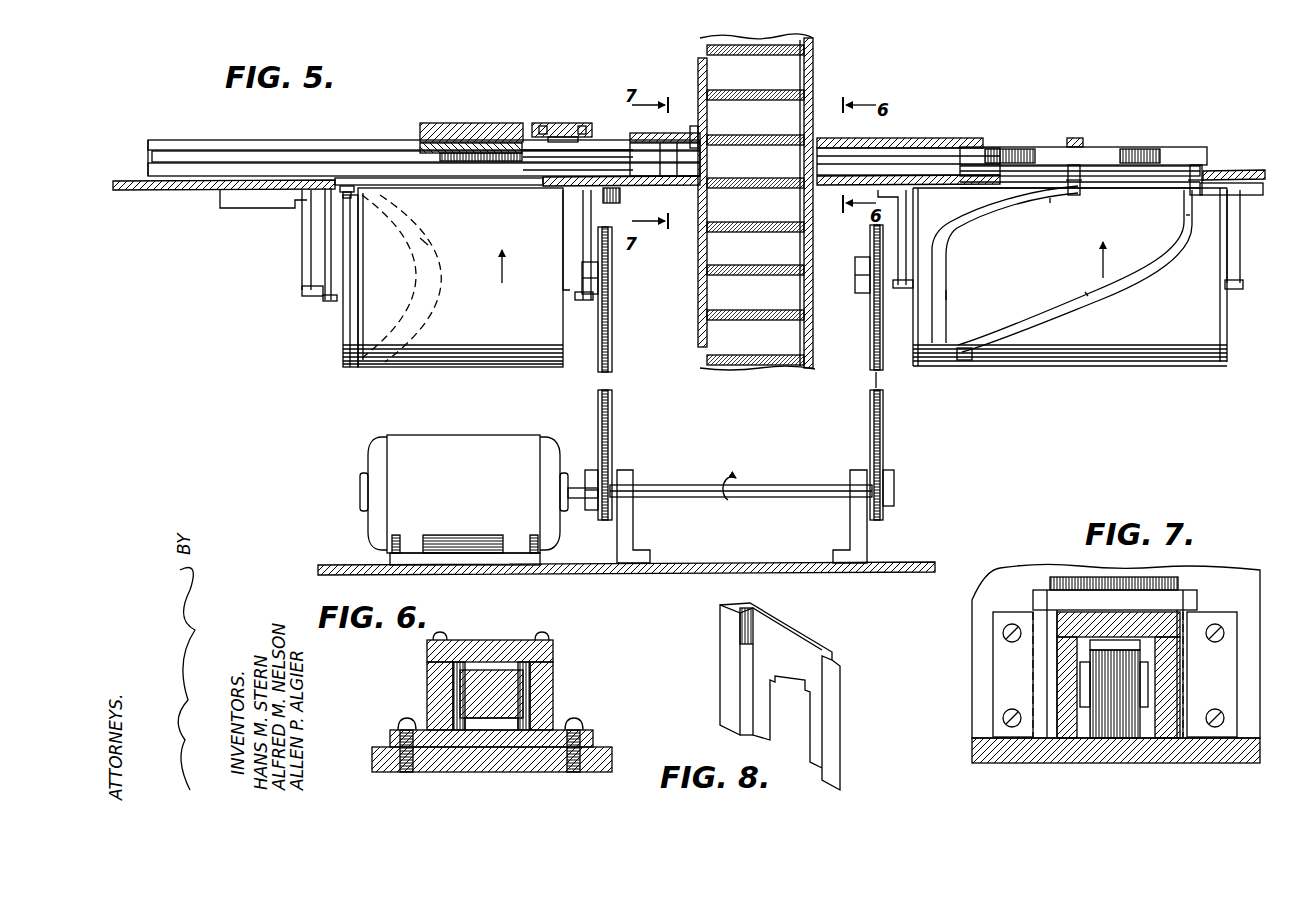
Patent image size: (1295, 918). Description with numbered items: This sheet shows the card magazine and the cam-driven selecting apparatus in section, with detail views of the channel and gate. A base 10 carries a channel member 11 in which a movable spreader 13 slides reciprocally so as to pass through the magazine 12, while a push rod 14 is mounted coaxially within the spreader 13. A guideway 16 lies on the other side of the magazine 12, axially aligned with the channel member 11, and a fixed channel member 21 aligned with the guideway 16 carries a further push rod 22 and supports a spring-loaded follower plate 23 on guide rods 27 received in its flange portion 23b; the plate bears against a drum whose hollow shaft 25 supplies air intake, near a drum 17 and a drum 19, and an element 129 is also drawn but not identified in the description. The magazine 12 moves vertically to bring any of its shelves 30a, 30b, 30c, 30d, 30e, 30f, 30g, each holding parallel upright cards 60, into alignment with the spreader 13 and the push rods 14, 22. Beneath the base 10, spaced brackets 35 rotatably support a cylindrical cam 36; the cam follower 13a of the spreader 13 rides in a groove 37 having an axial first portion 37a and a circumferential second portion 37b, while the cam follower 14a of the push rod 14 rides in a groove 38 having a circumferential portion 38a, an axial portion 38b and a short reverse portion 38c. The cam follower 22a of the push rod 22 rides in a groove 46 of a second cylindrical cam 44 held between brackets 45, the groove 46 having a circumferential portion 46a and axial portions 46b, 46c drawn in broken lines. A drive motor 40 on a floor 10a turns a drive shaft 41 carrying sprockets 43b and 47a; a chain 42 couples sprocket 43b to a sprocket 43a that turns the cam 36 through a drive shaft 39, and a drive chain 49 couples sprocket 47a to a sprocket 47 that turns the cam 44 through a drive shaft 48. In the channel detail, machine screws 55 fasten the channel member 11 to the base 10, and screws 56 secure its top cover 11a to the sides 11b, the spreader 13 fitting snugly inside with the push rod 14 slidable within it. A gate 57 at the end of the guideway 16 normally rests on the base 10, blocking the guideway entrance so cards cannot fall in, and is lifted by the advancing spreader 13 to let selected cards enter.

In FIG. 5, the base 10 is at (178, 187).
In FIG. 6, the base 10 is at (605, 748).
In FIG. 7, the base 10 is at (1000, 762).
In FIG. 5, the floor 10a is at (648, 574).
In FIG. 5, the channel member 11 is at (944, 138).
In FIG. 6, the channel member 11 is at (528, 640).
In FIG. 6, the top cover 11a is at (497, 650).
In FIG. 6, the sides 11b is at (428, 677).
In FIG. 5, the magazine 12 is at (759, 202).
In FIG. 7, the magazine 12 is at (980, 598).
In FIG. 5, the spreader 13 is at (1010, 147).
In FIG. 6, the spreader 13 is at (452, 692).
In FIG. 5, the cam follower 13a is at (1078, 192).
In FIG. 5, the push rod 14 is at (1125, 150).
In FIG. 6, the push rod 14 is at (512, 686).
In FIG. 5, the cam follower 14a is at (1196, 195).
In FIG. 5, the guideway 16 is at (645, 135).
In FIG. 7, the guideway 16 is at (1160, 622).
In FIG. 5, the drum 17 is at (583, 125).
In FIG. 5, the drum 19 is at (290, 147).
In FIG. 5, the fixed channel member 21 is at (455, 128).
In FIG. 5, the push rod 22 is at (418, 150).
In FIG. 5, the cam follower 22a is at (348, 200).
In FIG. 5, the follower plate 23 is at (548, 123).
In FIG. 5, the flange portion 23b is at (562, 124).
In FIG. 5, the hollow shaft 25 is at (621, 198).
In FIG. 5, the guide rods 27 is at (540, 128).
In FIG. 5, the shelf 30a is at (800, 60).
In FIG. 5, the shelf 30b is at (800, 105).
In FIG. 5, the shelf 30c is at (718, 180).
In FIG. 5, the shelf 30d is at (718, 222).
In FIG. 5, the shelf 30e is at (718, 253).
In FIG. 5, the shelf 30f is at (718, 291).
In FIG. 5, the shelf 30g is at (718, 332).
In FIG. 5, the brackets 35 is at (908, 207).
In FIG. 5, the cylindrical cam 36 is at (1187, 360).
In FIG. 5, the groove 37 is at (1004, 214).
In FIG. 5, the first portion of groove 37a is at (1052, 200).
In FIG. 5, the second portion of groove 37b is at (947, 290).
In FIG. 5, the groove 38 is at (1156, 264).
In FIG. 5, the first portion of groove 38a is at (1184, 216).
In FIG. 5, the second portion of groove 38b is at (1086, 294).
In FIG. 5, the third portion of groove 38c is at (966, 360).
In FIG. 5, the drive shaft 39 is at (886, 292).
In FIG. 5, the drive motor 40 is at (474, 440).
In FIG. 5, the drive shaft 41 is at (770, 486).
In FIG. 5, the chain 42 is at (872, 392).
In FIG. 5, the sprocket 43a is at (868, 238).
In FIG. 5, the sprocket 43b is at (895, 486).
In FIG. 5, the cylindrical cam 44 is at (510, 356).
In FIG. 5, the brackets 45 is at (300, 254).
In FIG. 5, the groove 46 is at (345, 323).
In FIG. 5, the first portion of groove 46a is at (352, 290).
In FIG. 5, the second portion of groove 46b is at (420, 238).
In FIG. 5, the third portion of groove 46c is at (430, 303).
In FIG. 5, the sprocket 47 is at (613, 276).
In FIG. 5, the sprocket 47a is at (592, 512).
In FIG. 5, the drive shaft 48 is at (592, 295).
In FIG. 5, the drive chain 49 is at (612, 392).
In FIG. 6, the machine screws 55 is at (398, 724).
In FIG. 6, the screws 56 is at (430, 637).
In FIG. 5, the gate 57 is at (692, 130).
In FIG. 8, the gate 57 is at (790, 630).
In FIG. 7, the gate 57 is at (1060, 580).
In FIG. 7, the cards 60 is at (1102, 578).
In FIG. 5, the plate 129 is at (190, 168).